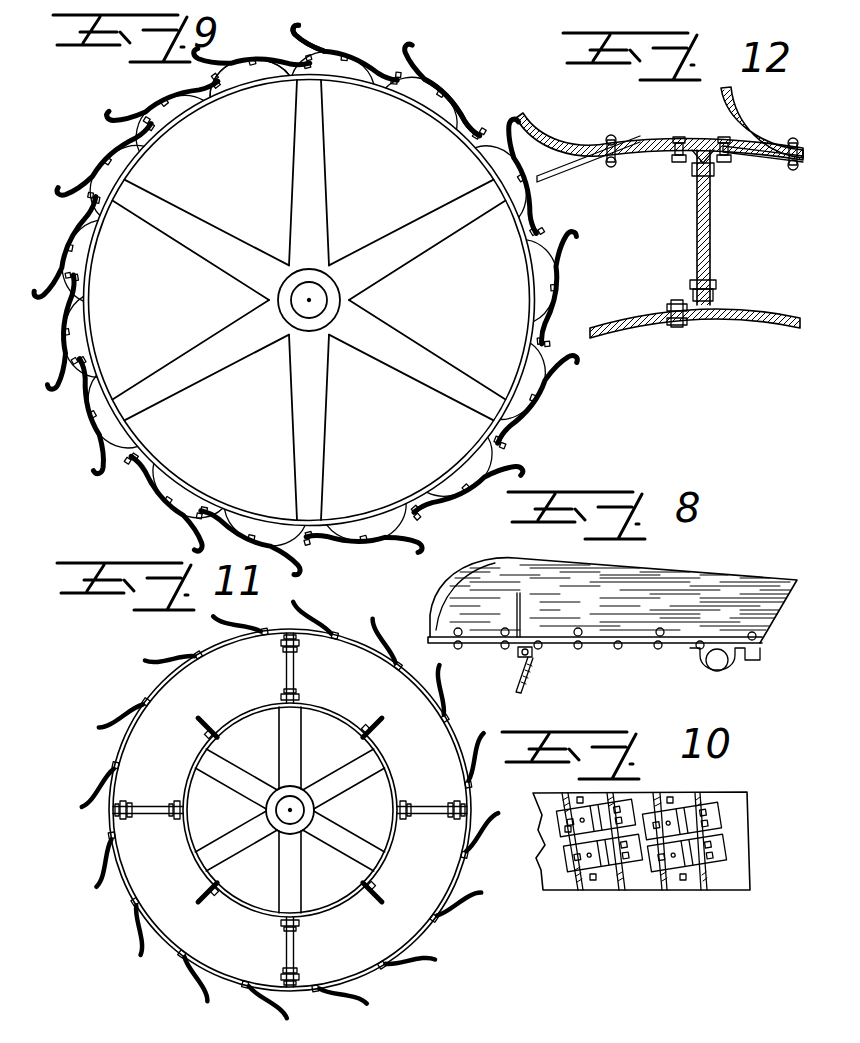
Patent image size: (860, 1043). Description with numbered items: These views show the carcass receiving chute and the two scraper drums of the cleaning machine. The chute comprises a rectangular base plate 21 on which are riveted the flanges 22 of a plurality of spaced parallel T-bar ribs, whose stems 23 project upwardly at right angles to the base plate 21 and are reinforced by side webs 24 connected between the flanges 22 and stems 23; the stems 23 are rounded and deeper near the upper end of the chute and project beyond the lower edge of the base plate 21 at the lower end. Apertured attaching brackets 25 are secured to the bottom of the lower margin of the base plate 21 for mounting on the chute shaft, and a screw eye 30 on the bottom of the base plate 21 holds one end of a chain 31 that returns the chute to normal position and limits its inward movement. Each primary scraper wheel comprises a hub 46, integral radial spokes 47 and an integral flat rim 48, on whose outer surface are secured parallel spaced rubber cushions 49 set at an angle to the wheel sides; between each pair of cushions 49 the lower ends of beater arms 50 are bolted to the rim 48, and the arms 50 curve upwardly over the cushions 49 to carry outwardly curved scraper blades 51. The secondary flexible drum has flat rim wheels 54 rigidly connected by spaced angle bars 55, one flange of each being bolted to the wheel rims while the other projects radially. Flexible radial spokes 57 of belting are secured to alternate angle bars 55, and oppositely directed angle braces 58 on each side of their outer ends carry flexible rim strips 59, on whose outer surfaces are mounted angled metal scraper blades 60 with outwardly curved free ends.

In FIG. 8, the base plate 21 is at (562, 643).
In FIG. 8, the flanges 22 is at (602, 637).
In FIG. 8, the stems 23 is at (580, 545).
In FIG. 8, the side webs 24 is at (522, 607).
In FIG. 8, the attaching brackets 25 is at (730, 670).
In FIG. 8, the screw eye 30 is at (518, 650).
In FIG. 8, the chain 31 is at (516, 685).
In FIG. 9, the hub 46 is at (344, 300).
In FIG. 9, the radial spokes 47 is at (308, 300).
In FIG. 9, the rim 48 is at (308, 300).
In FIG. 10, the rim 48 is at (662, 841).
In FIG. 9, the resilient supports or cushions 49 is at (219, 97).
In FIG. 10, the resilient supports or cushions 49 is at (700, 875).
In FIG. 9, the beater arms 50 is at (430, 107).
In FIG. 10, the beater arms 50 is at (610, 847).
In FIG. 9, the scraper blades 51 is at (350, 36).
In FIG. 10, the scraper blades 51 is at (562, 853).
In FIG. 12, the flat rim wheels 54 is at (780, 325).
In FIG. 11, the flat rim wheels 54 is at (290, 810).
In FIG. 12, the angle bars 55 is at (667, 305).
In FIG. 11, the angle bars 55 is at (290, 804).
In FIG. 12, the flexible radial arms or spokes 57 is at (712, 260).
In FIG. 11, the flexible radial arms or spokes 57 is at (290, 810).
In FIG. 12, the angle braces 58 is at (733, 157).
In FIG. 11, the angle braces 58 is at (290, 810).
In FIG. 12, the flexible rim strips 59 is at (777, 163).
In FIG. 11, the flexible rim strips 59 is at (290, 810).
In FIG. 12, the scraper blades 60 is at (735, 118).
In FIG. 11, the scraper blades 60 is at (290, 810).